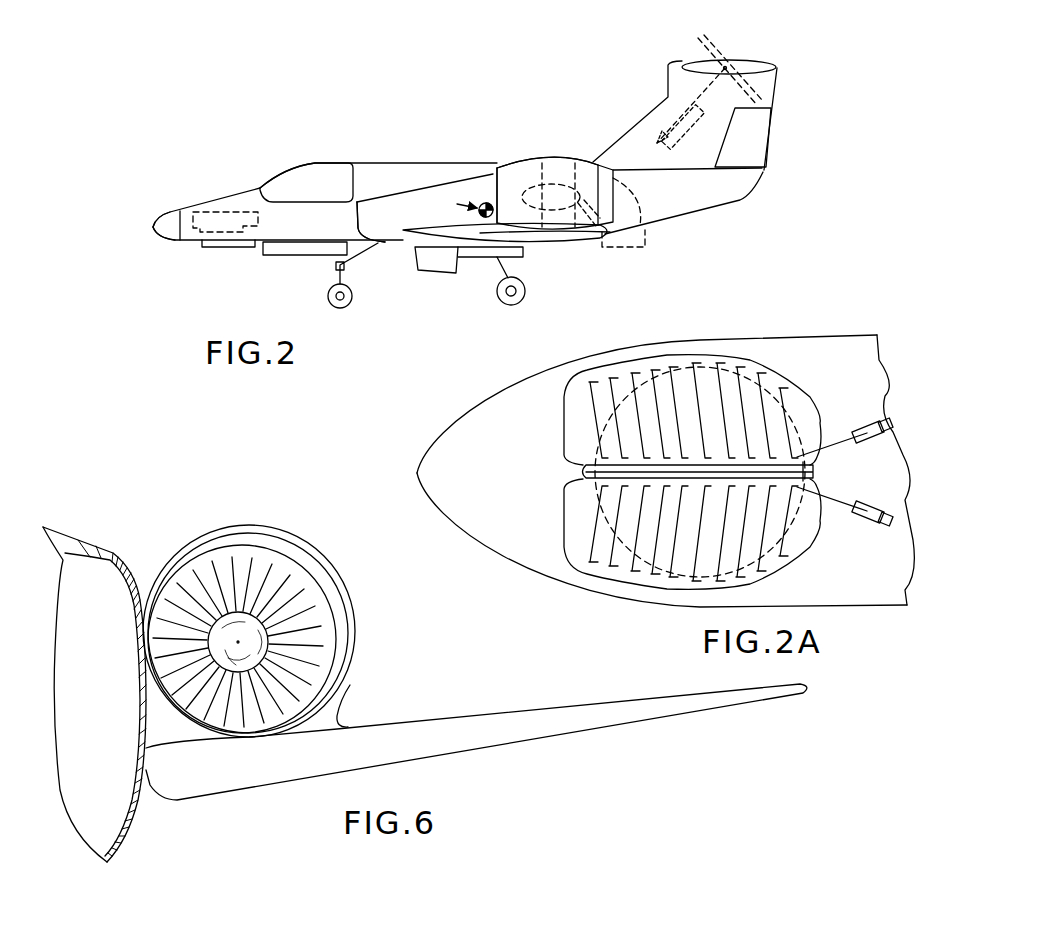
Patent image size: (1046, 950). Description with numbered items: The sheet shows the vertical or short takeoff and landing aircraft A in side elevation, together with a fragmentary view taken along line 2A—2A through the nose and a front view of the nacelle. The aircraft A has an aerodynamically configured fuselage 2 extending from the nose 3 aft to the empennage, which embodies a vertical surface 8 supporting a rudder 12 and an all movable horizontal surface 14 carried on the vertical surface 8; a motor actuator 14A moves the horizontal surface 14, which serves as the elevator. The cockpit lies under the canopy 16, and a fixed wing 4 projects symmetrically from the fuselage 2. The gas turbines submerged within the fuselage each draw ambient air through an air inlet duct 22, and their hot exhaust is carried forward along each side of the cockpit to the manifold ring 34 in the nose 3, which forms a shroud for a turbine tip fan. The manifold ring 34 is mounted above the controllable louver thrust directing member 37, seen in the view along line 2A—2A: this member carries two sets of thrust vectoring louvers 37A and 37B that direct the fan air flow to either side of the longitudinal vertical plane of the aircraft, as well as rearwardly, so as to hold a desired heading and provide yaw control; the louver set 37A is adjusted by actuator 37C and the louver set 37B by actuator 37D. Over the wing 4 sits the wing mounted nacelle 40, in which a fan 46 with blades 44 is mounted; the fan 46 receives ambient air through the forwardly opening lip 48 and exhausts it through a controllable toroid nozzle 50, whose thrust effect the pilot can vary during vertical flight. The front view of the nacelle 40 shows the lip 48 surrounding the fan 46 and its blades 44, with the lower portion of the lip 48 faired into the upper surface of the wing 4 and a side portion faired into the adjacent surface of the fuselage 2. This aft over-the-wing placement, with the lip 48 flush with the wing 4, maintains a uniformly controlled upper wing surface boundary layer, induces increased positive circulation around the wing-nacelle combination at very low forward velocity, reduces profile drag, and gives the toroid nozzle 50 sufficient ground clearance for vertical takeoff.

In FIG. 2, the aircraft A is at (280, 165).
In FIG. 2, the fuselage 2 is at (393, 167).
In FIG. 6, the fuselage 2 is at (68, 540).
In FIG. 2, the nose 3 is at (167, 227).
In FIG. 2A, the nose 3 is at (460, 423).
In FIG. 6, the fixed wing 4 is at (465, 717).
In FIG. 2, the vertical surface 8 is at (627, 144).
In FIG. 2, the rudder 12 is at (757, 148).
In FIG. 2, the all movable horizontal surface 14 is at (752, 62).
In FIG. 2, the motor actuator 14A is at (653, 108).
In FIG. 2, the canopy 16 is at (330, 172).
In FIG. 2, the air inlet duct 22 is at (382, 230).
In FIG. 2, the manifold ring 34 is at (201, 211).
In FIG. 2, the controllable louver thrust directing member 37 is at (207, 245).
In FIG. 2A, the thrust vectoring louver set 37A is at (660, 550).
In FIG. 2A, the thrust vectoring louver set 37B is at (722, 377).
In FIG. 2A, the actuator 37C is at (860, 527).
In FIG. 2A, the actuator 37D is at (867, 417).
In FIG. 2, the wing mounted nacelle 40 is at (517, 178).
In FIG. 6, the wing mounted nacelle 40 is at (223, 522).
In FIG. 6, the fan blades 44 is at (290, 613).
In FIG. 6, the fan 46 is at (215, 637).
In FIG. 2, the forwardly opening lip 48 is at (480, 177).
In FIG. 6, the forwardly opening lip 48 is at (342, 670).
In FIG. 2, the controllable toroid nozzle 50 is at (660, 220).
In FIG. 2, the line 2A— 2A is at (188, 266).